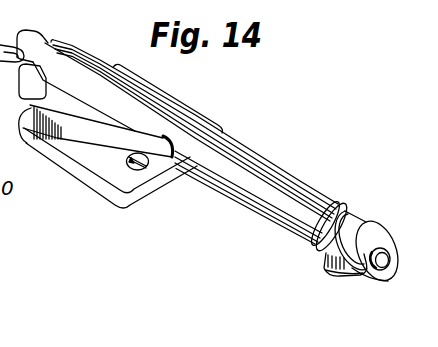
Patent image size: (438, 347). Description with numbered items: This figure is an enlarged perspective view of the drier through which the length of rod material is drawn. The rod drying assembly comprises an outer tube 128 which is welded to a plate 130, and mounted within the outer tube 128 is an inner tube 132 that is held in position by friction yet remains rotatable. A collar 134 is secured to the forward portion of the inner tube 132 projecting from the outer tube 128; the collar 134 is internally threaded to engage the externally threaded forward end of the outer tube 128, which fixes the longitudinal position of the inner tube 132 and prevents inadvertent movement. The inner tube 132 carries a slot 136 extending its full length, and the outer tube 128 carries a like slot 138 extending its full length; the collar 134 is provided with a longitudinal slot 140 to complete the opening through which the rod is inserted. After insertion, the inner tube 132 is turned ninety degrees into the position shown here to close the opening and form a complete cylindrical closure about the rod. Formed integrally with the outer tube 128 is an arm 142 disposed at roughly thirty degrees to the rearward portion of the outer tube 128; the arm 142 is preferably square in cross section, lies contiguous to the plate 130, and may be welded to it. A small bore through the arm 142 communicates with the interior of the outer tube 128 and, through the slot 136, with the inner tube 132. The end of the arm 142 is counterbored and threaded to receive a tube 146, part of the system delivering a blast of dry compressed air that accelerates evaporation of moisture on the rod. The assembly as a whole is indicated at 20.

The toy gun assembly 20 is at (268, 146).
The outer tube 128 is at (240, 177).
The plate 130 is at (110, 192).
The inner tube 132 is at (32, 40).
The collar 134 is at (360, 236).
The slot 136 is at (12, 43).
The slot 138 is at (97, 63).
The longitudinal slot 140 is at (345, 262).
The arm 142 is at (88, 134).
The tube 146 is at (24, 100).